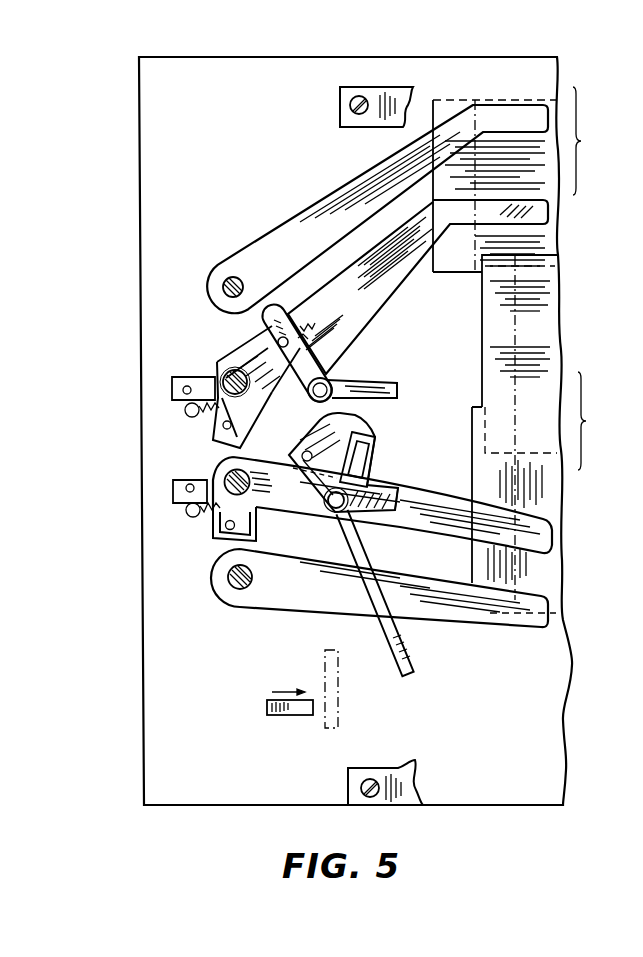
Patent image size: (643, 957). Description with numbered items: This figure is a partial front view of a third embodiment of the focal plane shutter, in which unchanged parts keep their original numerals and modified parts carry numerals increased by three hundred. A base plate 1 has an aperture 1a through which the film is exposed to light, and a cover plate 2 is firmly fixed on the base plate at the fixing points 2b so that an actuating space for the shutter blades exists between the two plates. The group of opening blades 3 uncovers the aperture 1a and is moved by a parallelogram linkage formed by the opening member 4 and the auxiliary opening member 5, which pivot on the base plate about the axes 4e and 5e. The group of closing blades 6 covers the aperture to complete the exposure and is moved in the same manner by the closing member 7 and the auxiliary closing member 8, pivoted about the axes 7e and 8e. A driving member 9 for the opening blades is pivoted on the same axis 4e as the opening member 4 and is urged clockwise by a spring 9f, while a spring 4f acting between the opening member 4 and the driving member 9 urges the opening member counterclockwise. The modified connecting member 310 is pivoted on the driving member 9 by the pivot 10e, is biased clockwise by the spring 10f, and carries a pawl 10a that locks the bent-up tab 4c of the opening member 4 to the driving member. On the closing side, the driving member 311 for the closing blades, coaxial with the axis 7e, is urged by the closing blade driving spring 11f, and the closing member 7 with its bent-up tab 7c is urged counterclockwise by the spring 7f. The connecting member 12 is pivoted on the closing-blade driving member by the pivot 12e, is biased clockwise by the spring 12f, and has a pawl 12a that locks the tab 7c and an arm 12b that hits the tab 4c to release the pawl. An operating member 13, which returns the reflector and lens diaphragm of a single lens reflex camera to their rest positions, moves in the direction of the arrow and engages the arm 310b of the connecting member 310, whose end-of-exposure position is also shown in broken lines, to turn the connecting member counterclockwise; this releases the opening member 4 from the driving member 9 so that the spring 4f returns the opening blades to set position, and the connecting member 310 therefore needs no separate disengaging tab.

The base plate 1 is at (551, 717).
The aperture 1a is at (520, 581).
The cover plate 2 is at (408, 777).
The fixing points 2b is at (350, 105).
The opening blades 3 is at (537, 427).
The opening member 4 is at (531, 526).
The bent-up tab 4c is at (374, 434).
The axis 4e is at (252, 488).
The spring 4f is at (214, 522).
The auxiliary opening member 5 is at (522, 624).
The axis 5e is at (232, 591).
The closing blades 6 is at (515, 179).
The closing member 7 is at (528, 208).
The bent-up tab 7c is at (284, 318).
The axis 7e is at (222, 376).
The spring 7f is at (218, 416).
The auxiliary closing member 8 is at (530, 108).
The axis 8e is at (231, 279).
The driving member 9 is at (320, 506).
The spring 9f is at (205, 512).
The pawl 10a is at (358, 417).
The pivot 10e is at (337, 513).
The spring 10f is at (394, 537).
The closing blade driving spring 11f is at (173, 406).
The connecting member 12 is at (262, 340).
The pawl 12a is at (279, 306).
The arm 12b is at (399, 389).
The pivot 12e is at (332, 382).
The spring 12f is at (317, 328).
The operating member 13 is at (298, 715).
The connecting member 310 is at (333, 517).
The arm 310b is at (414, 662).
The bracket 311 is at (252, 358).